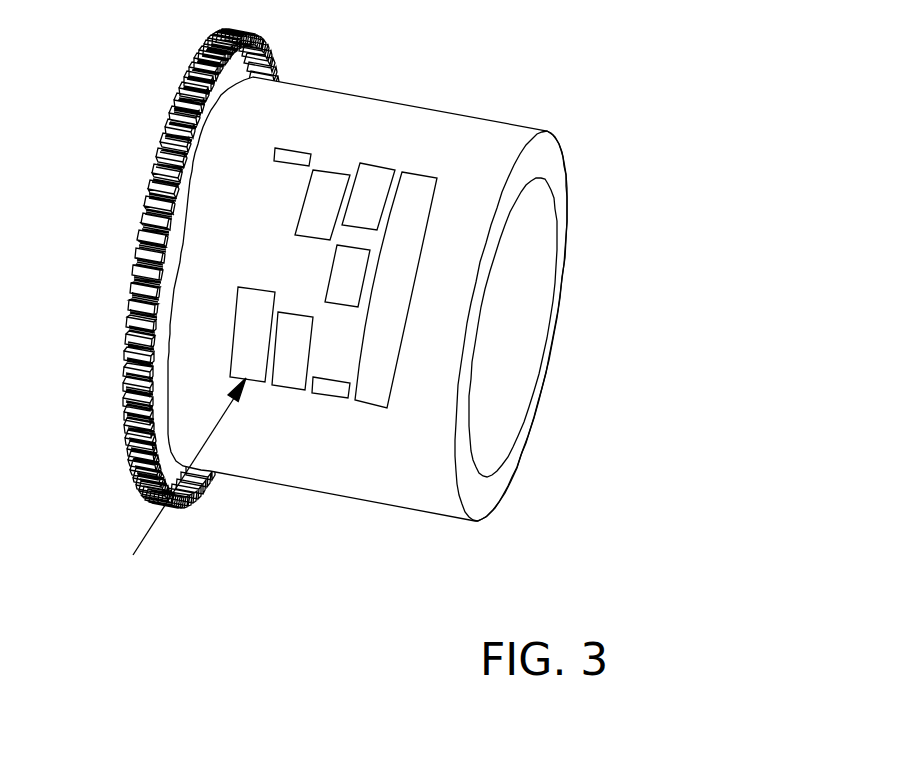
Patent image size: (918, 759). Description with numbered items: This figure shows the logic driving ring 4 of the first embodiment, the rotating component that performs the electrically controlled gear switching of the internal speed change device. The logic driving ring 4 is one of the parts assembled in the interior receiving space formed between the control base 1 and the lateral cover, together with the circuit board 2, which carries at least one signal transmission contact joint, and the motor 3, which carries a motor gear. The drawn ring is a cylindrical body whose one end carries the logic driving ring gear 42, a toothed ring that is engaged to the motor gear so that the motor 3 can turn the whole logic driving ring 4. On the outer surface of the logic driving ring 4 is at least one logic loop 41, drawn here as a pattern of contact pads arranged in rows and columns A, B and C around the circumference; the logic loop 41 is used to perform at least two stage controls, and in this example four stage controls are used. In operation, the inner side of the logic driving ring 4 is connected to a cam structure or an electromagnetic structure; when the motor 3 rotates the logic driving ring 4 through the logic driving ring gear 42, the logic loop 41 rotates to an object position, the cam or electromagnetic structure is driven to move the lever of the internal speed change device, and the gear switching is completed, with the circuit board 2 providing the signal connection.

The control base 1 is at (240, 334).
The circuit board 2 is at (284, 330).
The motor 3 is at (301, 255).
The logic driving ring 4 is at (337, 498).
The logic loop 41 is at (173, 483).
The logic driving ring gear 42 is at (163, 173).
The electrode A is at (295, 152).
The electrode B is at (333, 171).
The electrode C is at (380, 167).